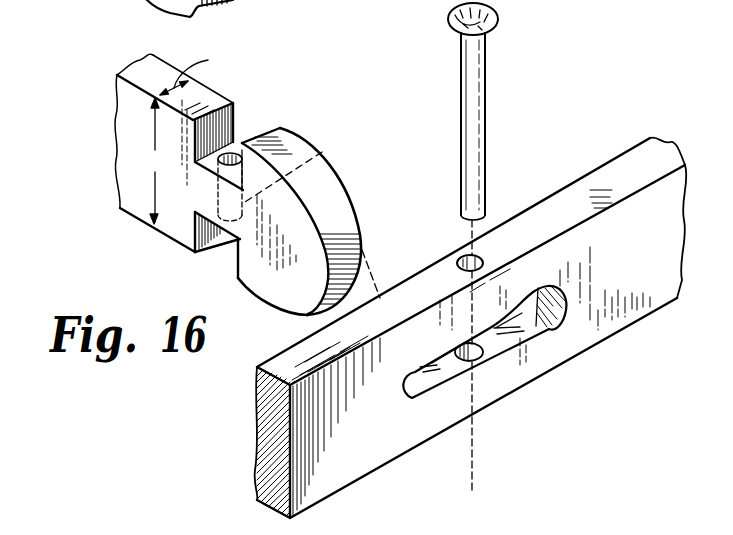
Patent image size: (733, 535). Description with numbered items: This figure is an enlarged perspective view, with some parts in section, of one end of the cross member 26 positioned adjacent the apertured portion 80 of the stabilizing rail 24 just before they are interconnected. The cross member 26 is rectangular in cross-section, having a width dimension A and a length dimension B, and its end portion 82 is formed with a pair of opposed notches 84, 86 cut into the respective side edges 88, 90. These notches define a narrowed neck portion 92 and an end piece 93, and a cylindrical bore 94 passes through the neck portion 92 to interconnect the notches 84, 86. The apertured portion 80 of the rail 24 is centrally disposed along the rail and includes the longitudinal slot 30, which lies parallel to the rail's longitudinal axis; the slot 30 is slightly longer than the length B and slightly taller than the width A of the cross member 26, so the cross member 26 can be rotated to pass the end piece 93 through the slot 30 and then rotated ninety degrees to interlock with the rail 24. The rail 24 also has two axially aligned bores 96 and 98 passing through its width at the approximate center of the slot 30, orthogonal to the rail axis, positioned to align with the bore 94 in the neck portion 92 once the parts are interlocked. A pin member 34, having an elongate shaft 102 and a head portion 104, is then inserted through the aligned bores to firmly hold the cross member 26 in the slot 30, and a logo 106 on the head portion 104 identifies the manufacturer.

The stabilizing rail 24 is at (471, 327).
The cross member 26 is at (145, 170).
The elongated slot 30 is at (532, 321).
The pin member 34 is at (465, 247).
The apertured portion 80 is at (484, 347).
The end portion 82 is at (279, 164).
The notch 84 is at (323, 191).
The notch 86 is at (229, 247).
The side edge 88 is at (141, 76).
The side edge 90 is at (122, 210).
The neck portion 92 is at (204, 204).
The end piece 93 is at (313, 230).
The cylindrical bore 94 is at (323, 147).
The bore 96 is at (468, 262).
The bore 98 is at (463, 361).
The elongate shaft 102 is at (472, 164).
The head portion 104 is at (497, 4).
The logo 106 is at (450, 28).